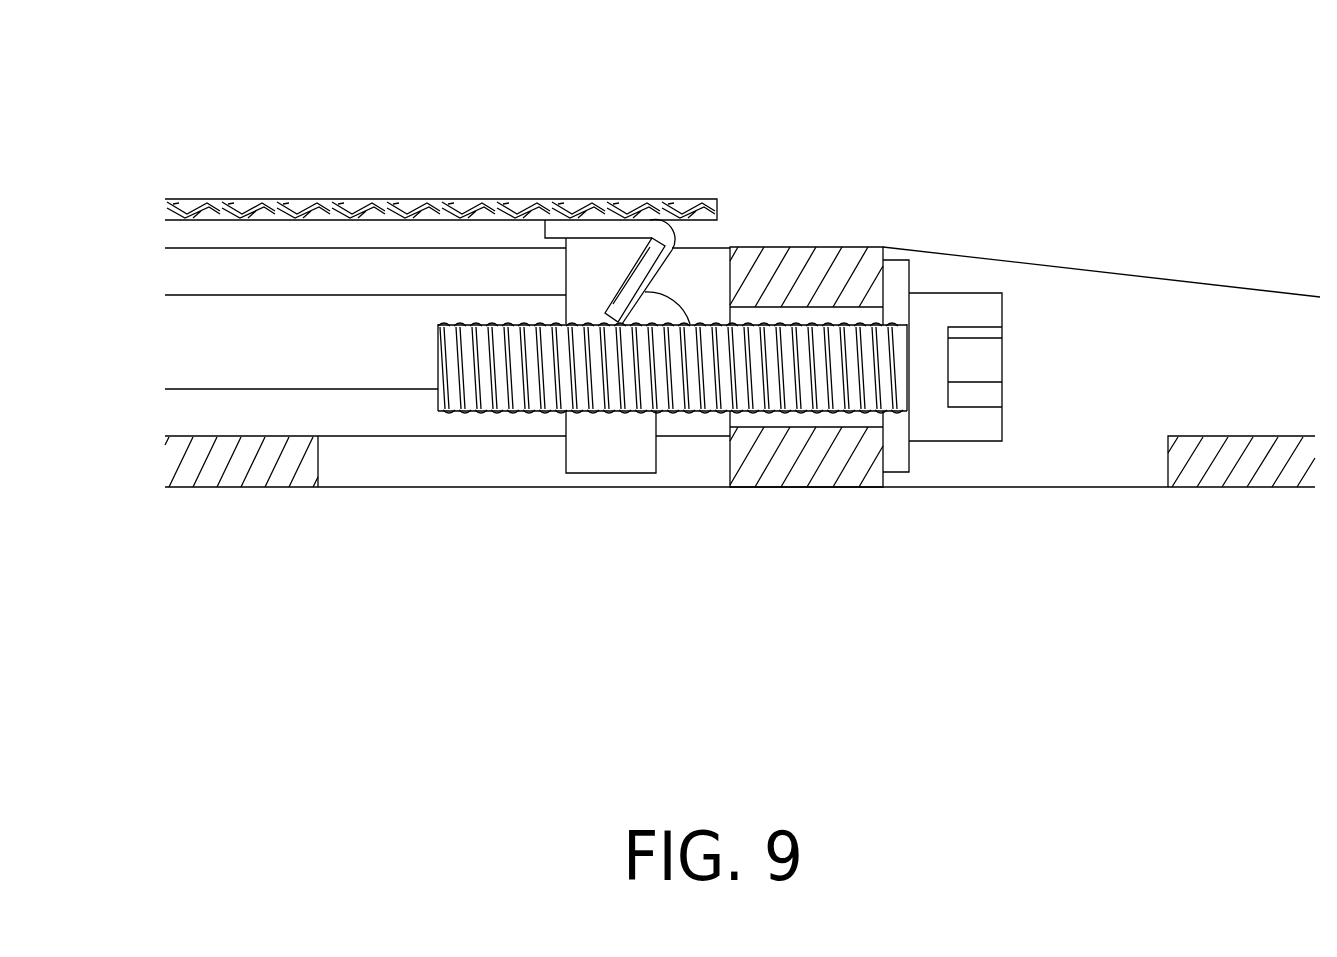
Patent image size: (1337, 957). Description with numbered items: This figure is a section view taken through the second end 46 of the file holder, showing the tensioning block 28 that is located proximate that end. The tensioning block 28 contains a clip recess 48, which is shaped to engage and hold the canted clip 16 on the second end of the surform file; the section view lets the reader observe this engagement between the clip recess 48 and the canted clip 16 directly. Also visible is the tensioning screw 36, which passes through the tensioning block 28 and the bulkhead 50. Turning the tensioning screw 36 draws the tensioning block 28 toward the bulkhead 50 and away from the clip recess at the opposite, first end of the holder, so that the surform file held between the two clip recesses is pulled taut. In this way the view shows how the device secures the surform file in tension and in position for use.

The canted clip 16 is at (650, 267).
The clip recess 48 is at (622, 285).
The tensioning screw 36 is at (770, 372).
The bulkhead 50 is at (792, 452).
The tensioning block 28 is at (613, 432).
The second end 46 is at (1192, 458).